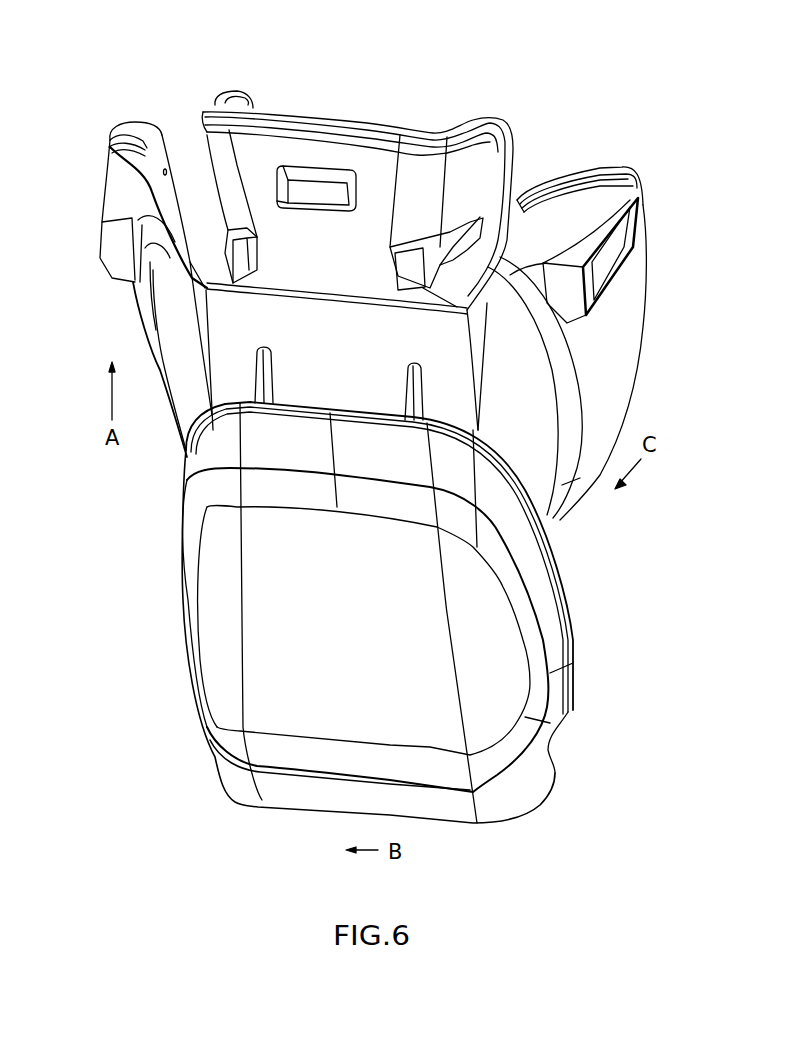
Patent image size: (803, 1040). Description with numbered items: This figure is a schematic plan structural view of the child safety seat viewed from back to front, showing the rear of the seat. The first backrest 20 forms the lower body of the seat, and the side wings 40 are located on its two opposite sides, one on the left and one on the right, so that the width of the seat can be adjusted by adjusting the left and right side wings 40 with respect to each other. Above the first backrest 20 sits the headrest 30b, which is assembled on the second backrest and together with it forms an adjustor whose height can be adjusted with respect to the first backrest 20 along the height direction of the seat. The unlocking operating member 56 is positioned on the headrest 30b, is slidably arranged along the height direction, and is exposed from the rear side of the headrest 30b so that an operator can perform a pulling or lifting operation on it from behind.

The headrest 30b is at (218, 97).
The unlocking operating member 56 is at (312, 188).
The side wing 40 is at (115, 165).
The first backrest 20 is at (220, 642).